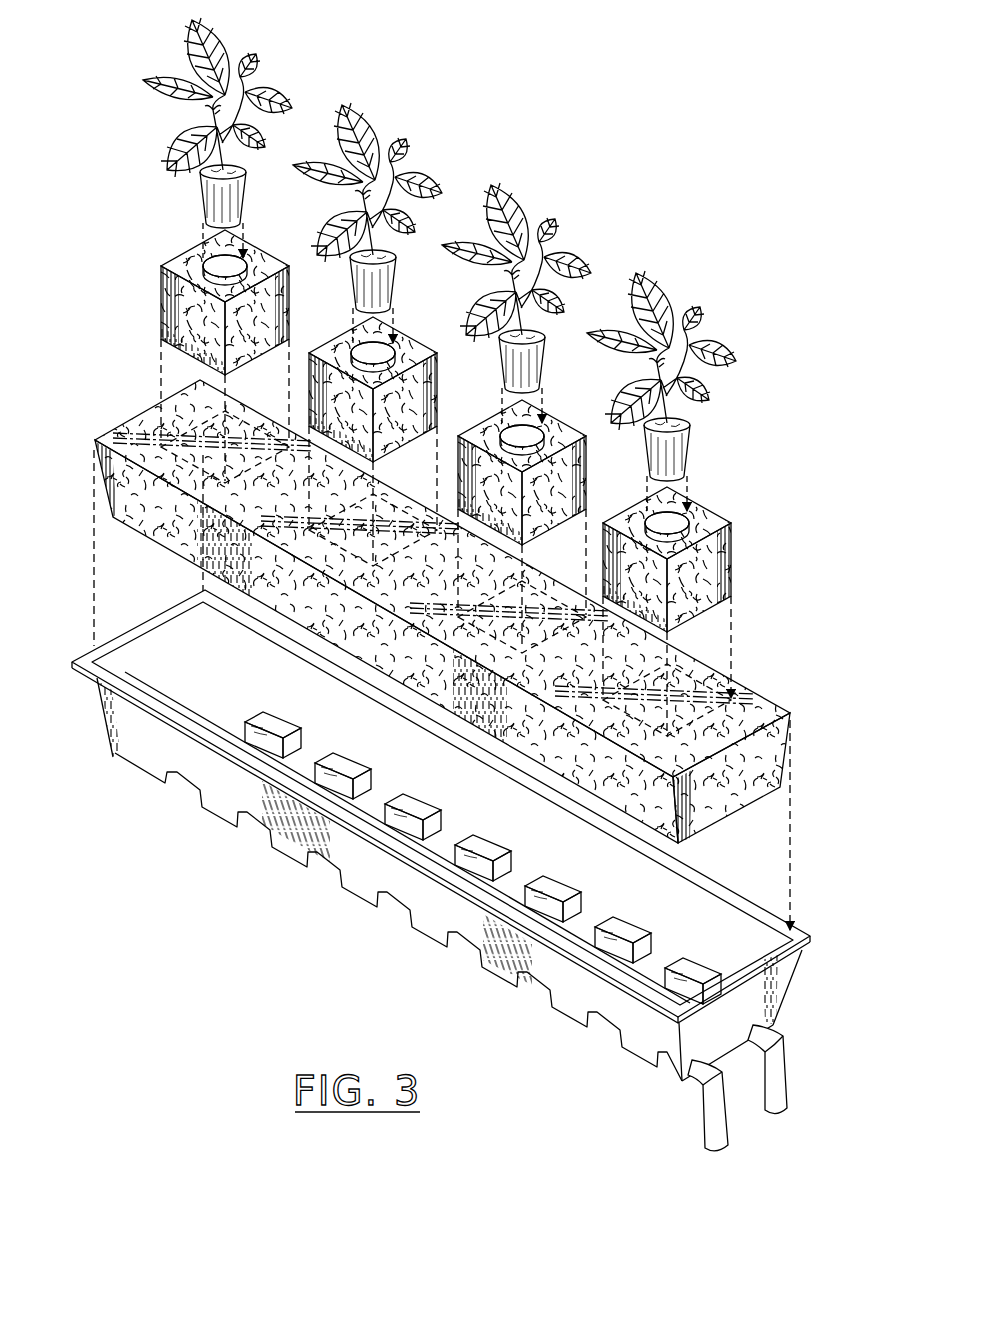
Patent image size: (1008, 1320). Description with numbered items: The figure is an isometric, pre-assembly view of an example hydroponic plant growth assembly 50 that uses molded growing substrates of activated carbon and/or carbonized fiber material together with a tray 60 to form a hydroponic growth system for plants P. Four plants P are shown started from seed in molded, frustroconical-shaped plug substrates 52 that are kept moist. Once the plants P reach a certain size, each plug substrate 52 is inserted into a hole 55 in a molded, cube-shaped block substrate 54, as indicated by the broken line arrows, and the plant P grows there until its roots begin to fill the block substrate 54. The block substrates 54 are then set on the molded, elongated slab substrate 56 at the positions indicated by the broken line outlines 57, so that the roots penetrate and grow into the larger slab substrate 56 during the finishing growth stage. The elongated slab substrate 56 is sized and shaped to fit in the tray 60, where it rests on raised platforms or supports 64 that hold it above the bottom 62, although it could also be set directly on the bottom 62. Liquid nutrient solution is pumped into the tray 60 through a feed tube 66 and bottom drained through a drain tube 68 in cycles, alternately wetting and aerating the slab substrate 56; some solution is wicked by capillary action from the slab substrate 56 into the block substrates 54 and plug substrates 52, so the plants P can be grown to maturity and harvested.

The hydroponic plant growth assembly 50 is at (650, 224).
The plug substrate 52 is at (200, 201).
The block substrate 54 is at (159, 302).
The hole 55 is at (223, 262).
The slab substrate 56 is at (131, 419).
The broken line outline 57 is at (237, 426).
The tray 60 is at (137, 622).
The bottom 62 is at (222, 718).
The raised platform 64 is at (630, 932).
The feed tube 66 is at (790, 1076).
The drain tube 68 is at (731, 1134).
The plant P is at (232, 47).